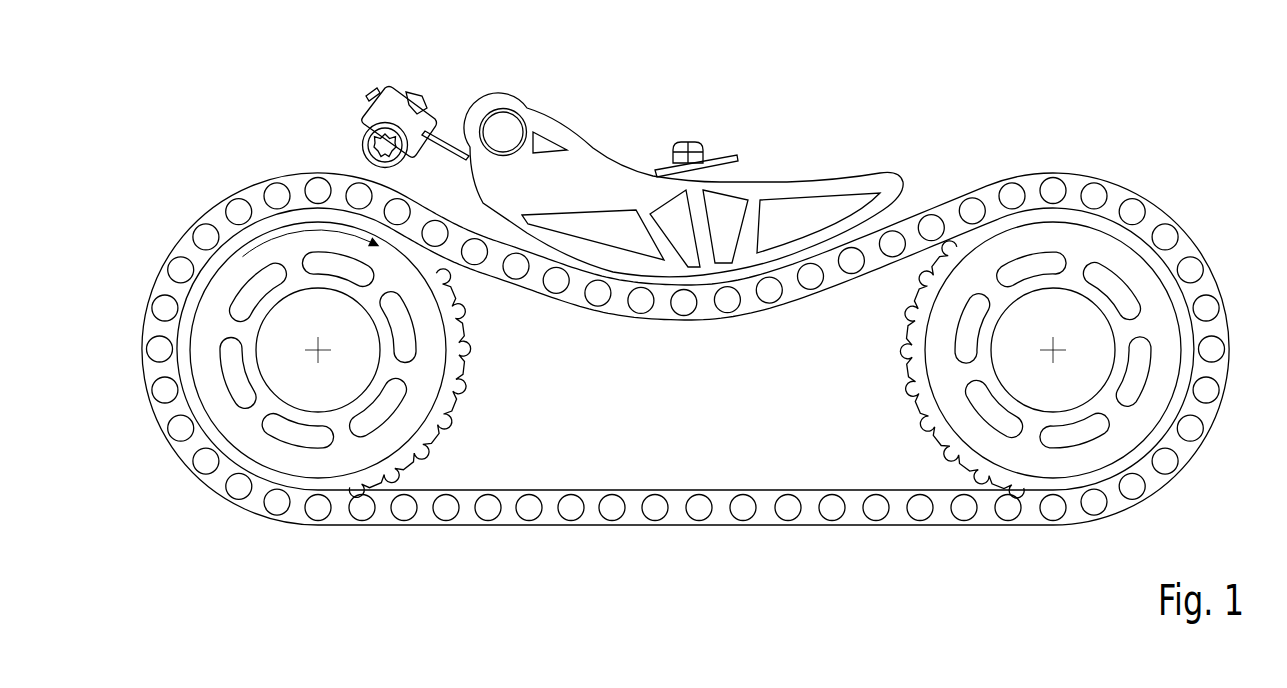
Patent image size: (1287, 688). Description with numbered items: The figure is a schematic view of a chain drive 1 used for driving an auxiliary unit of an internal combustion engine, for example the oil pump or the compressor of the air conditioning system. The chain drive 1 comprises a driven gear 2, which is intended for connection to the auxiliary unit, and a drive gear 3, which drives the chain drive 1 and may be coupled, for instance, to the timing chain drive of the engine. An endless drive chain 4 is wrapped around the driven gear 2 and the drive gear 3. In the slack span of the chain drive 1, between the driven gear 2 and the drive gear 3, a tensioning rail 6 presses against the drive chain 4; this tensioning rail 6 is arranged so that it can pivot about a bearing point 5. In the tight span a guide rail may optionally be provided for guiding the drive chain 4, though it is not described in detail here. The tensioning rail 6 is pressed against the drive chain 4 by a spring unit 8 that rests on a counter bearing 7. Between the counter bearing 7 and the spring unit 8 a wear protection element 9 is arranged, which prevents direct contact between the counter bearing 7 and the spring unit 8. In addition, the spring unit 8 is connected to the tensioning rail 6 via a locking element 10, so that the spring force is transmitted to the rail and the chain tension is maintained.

The chain drive 1 is at (972, 155).
The driven gear 2 is at (213, 328).
The drive gear 3 is at (1163, 332).
The drive chain 4 is at (1150, 228).
The bearing point 5 is at (503, 130).
The tensioning rail 6 is at (805, 180).
The counter bearing 7 is at (370, 148).
The spring unit 8 is at (452, 147).
The wear protection element 9 is at (387, 103).
The locking element 10 is at (683, 142).